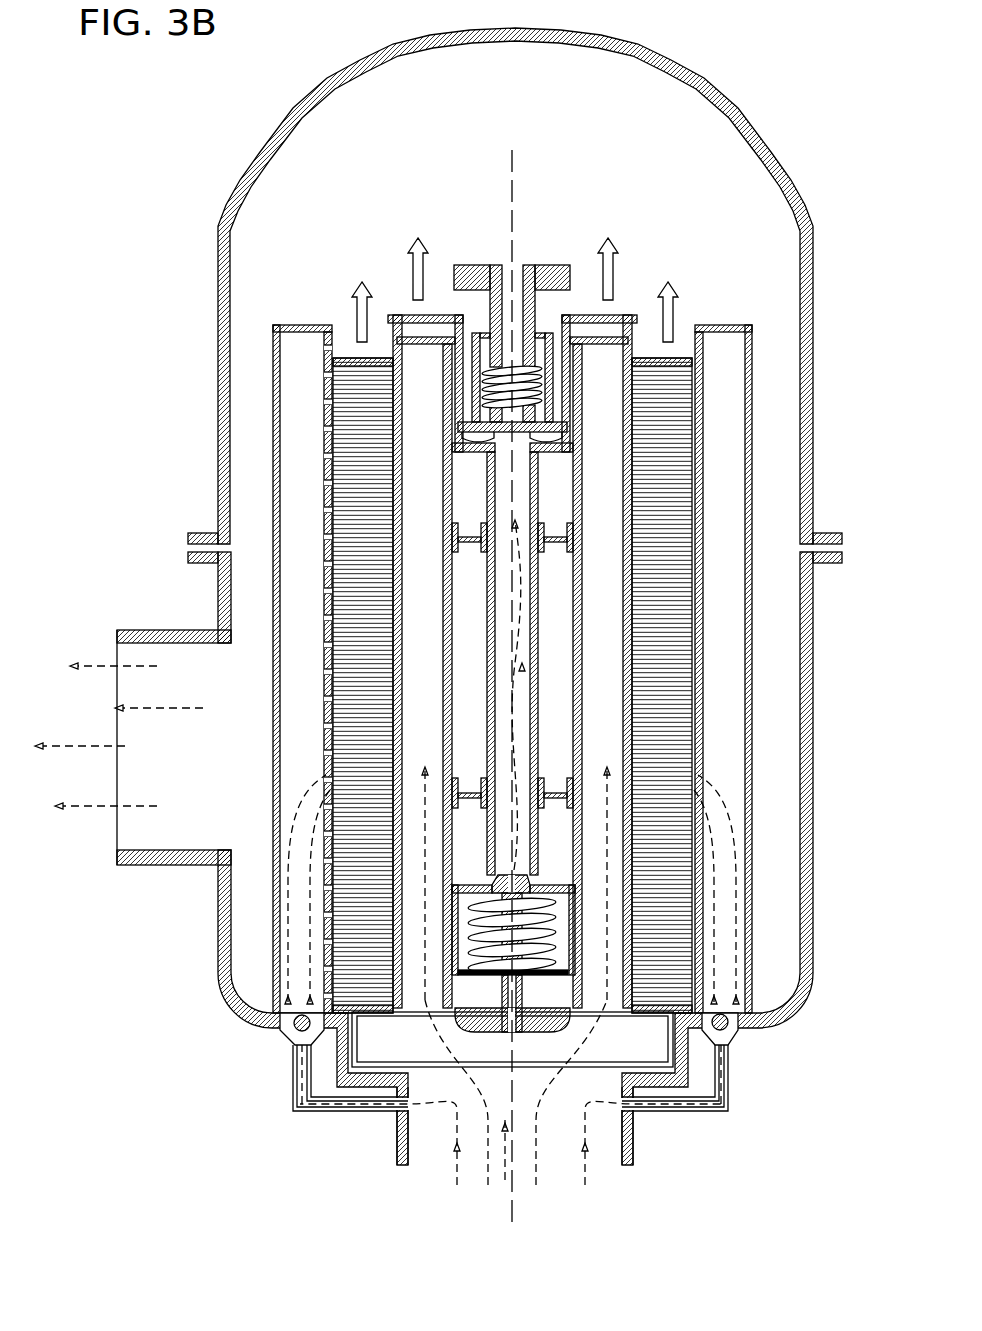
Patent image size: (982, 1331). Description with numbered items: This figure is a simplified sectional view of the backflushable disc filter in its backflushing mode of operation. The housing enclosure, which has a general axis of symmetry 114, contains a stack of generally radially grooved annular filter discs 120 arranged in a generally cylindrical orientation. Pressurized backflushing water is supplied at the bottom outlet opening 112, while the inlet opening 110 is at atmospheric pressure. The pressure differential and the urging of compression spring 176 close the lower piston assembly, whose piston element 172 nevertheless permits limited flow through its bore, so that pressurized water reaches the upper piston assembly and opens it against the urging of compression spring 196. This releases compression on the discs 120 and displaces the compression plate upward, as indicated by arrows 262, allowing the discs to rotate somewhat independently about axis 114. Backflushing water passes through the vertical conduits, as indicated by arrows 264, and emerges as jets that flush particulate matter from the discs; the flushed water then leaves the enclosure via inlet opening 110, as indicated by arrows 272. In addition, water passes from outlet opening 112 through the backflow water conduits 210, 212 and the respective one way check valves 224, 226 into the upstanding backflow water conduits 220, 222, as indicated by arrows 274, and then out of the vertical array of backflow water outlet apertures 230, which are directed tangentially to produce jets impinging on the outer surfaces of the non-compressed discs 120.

The inlet opening 110 is at (146, 831).
The bottom outlet opening 112 is at (603, 1158).
The axis of symmetry 114 is at (514, 195).
The radially grooved annular filter discs 120 is at (337, 448).
The piston element 172 is at (477, 1027).
The compression spring 176 is at (556, 888).
The compression spring 196 is at (511, 362).
The backflow water conduit 210 is at (310, 1107).
The backflow water conduit 212 is at (730, 1105).
The upstanding backflow water conduit 220 is at (306, 758).
The upstanding backflow water conduit 222 is at (675, 858).
The one way check valve 224 is at (282, 1037).
The one way check valve 226 is at (736, 1045).
The backflow water outlet apertures 230 is at (327, 504).
The arrows indicating upward displacement of compression plate 262 is at (352, 284).
The arrows indicating backflushing water flow through vertical conduits 264 is at (415, 1000).
The arrows indicating water exiting via inlet opening 272 is at (53, 745).
The arrows indicating flow through backflow water conduits 274 is at (283, 1006).